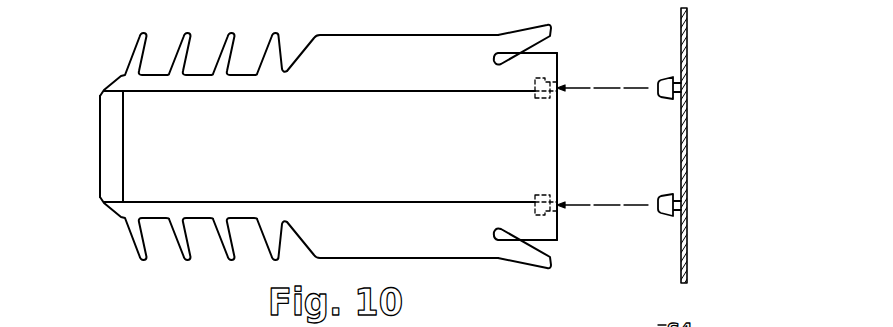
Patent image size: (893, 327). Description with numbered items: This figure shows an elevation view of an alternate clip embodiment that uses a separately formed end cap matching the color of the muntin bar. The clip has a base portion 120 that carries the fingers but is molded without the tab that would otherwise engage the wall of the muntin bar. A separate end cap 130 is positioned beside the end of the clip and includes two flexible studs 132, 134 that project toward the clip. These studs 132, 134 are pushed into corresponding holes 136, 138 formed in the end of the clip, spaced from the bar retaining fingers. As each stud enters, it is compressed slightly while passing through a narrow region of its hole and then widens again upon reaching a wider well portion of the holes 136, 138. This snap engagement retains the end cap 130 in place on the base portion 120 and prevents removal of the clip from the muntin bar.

The base portion 120 is at (458, 222).
The end cap 130 is at (687, 127).
The flexible stud 132 is at (662, 79).
The flexible stud 134 is at (662, 214).
The hole 136 is at (540, 84).
The hole 138 is at (539, 210).